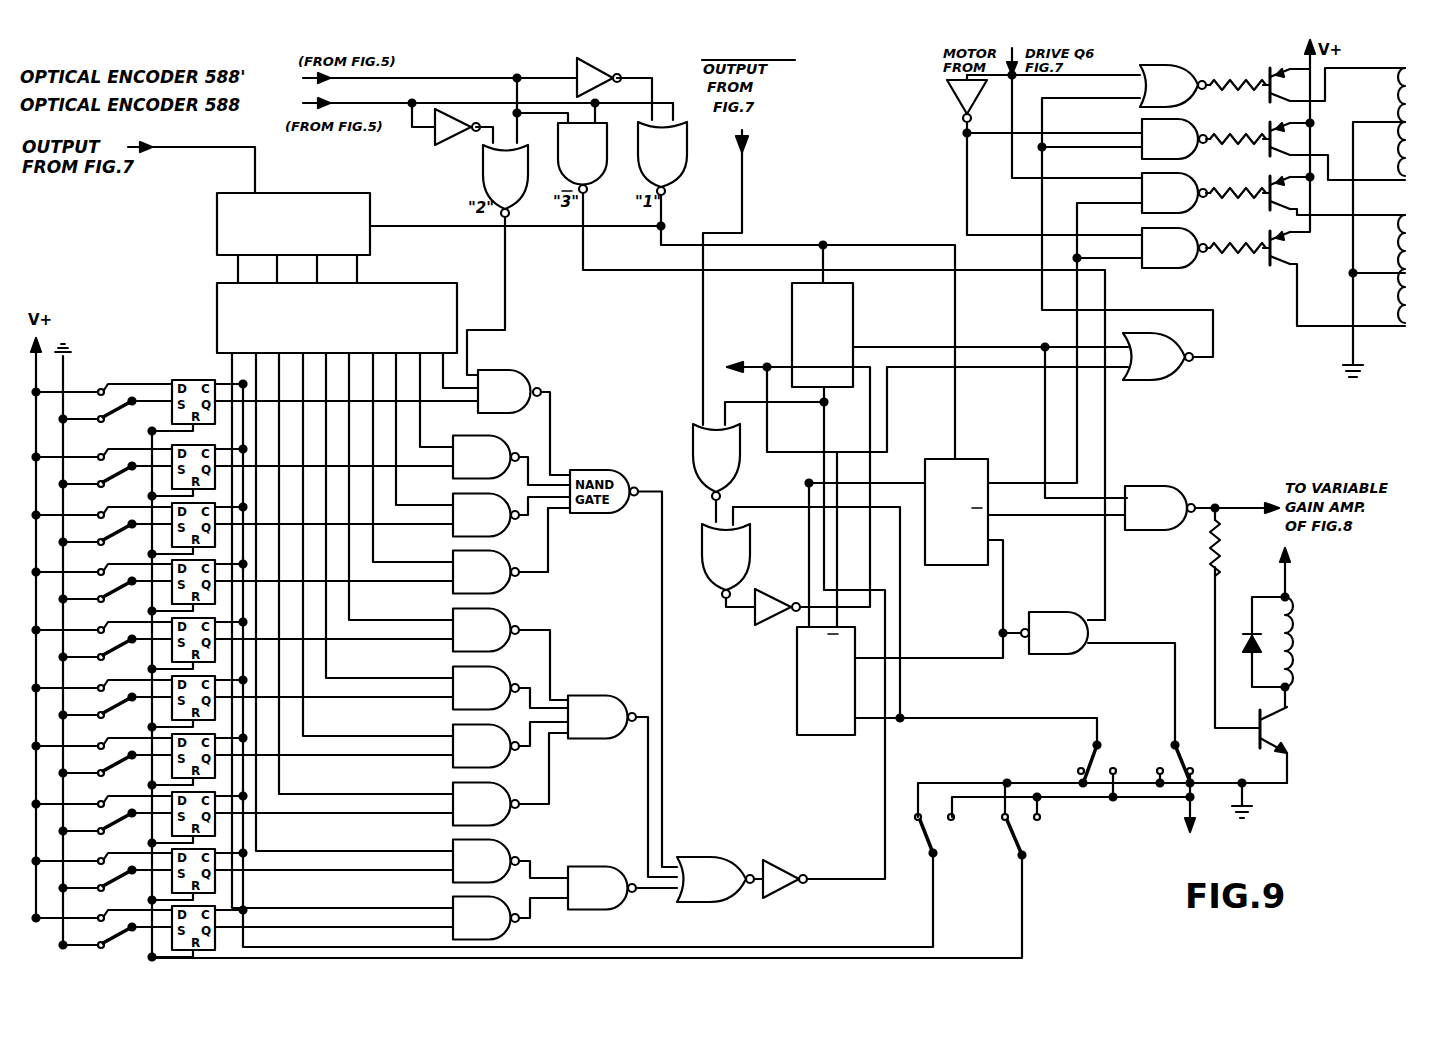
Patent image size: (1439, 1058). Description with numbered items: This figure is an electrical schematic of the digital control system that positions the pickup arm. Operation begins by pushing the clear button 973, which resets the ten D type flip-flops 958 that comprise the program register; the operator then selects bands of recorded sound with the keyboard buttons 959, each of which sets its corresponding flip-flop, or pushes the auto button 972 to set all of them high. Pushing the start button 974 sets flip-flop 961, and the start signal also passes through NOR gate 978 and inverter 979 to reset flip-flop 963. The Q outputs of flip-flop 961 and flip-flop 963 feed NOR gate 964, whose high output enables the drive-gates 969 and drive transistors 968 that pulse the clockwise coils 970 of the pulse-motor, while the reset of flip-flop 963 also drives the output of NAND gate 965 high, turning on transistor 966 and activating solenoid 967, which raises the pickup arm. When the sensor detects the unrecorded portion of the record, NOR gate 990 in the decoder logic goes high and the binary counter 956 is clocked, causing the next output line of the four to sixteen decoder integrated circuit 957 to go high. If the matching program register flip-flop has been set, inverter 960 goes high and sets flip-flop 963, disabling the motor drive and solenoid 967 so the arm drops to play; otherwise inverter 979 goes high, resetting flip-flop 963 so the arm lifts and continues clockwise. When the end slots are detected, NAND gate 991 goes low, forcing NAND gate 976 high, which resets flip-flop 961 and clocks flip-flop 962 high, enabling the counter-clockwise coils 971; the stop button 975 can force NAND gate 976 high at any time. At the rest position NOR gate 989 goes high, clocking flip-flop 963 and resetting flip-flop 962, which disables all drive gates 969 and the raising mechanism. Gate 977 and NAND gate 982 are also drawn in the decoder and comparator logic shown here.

The binary counter 956 is at (217, 228).
The 4 to 16 decoder integrated circuit 957 is at (217, 310).
The D type flip-flops 958 is at (188, 358).
The buttons 959 is at (128, 378).
The inverter 960 is at (778, 893).
The flip-flop 961 is at (797, 680).
The flip-flop 962 is at (965, 565).
The flip-flop 963 is at (853, 318).
The NOR gate 964 is at (1166, 370).
The NAND gate 965 is at (1130, 486).
The transistor 966 is at (1282, 733).
The solenoid 967 is at (1298, 640).
The drive transistors 968 is at (1275, 70).
The drive-gates 969 is at (1140, 102).
The clockwise coils 970 is at (1403, 60).
The counter-clockwise coils 971 is at (1402, 330).
The auto button 972 is at (922, 848).
The clear button 973 is at (1038, 822).
The start button 974 is at (1092, 748).
The stop button 975 is at (1185, 748).
The NAND gate 976 is at (1045, 655).
The NOR gate 977 is at (693, 440).
The NOR gate 978 is at (719, 590).
The inverter 979 is at (756, 625).
The NAND gate 982 is at (540, 372).
The NOR gate 989 is at (680, 170).
The NOR gate 990 is at (485, 168).
The NAND gate 991 is at (605, 166).